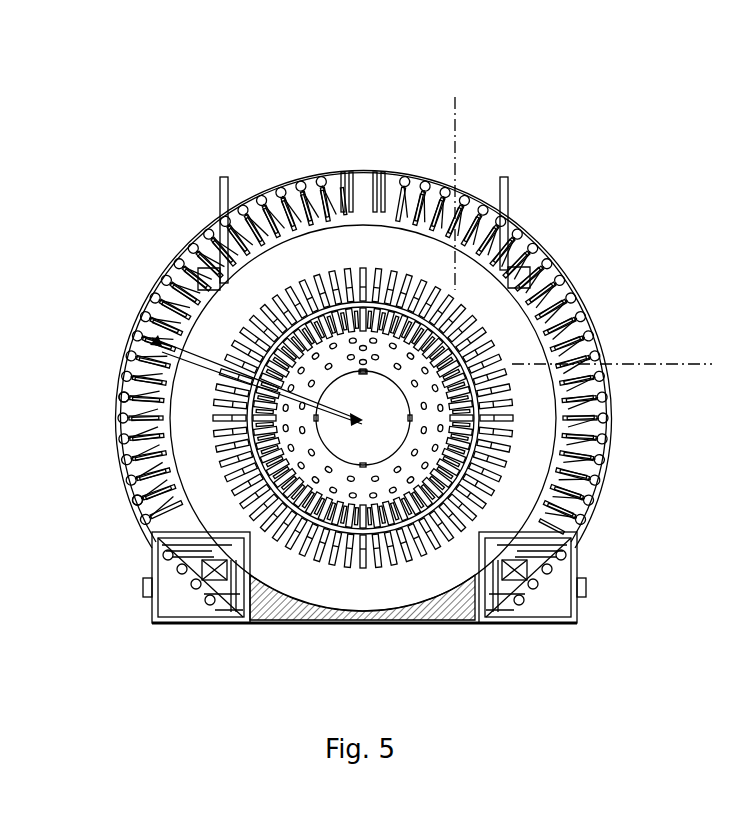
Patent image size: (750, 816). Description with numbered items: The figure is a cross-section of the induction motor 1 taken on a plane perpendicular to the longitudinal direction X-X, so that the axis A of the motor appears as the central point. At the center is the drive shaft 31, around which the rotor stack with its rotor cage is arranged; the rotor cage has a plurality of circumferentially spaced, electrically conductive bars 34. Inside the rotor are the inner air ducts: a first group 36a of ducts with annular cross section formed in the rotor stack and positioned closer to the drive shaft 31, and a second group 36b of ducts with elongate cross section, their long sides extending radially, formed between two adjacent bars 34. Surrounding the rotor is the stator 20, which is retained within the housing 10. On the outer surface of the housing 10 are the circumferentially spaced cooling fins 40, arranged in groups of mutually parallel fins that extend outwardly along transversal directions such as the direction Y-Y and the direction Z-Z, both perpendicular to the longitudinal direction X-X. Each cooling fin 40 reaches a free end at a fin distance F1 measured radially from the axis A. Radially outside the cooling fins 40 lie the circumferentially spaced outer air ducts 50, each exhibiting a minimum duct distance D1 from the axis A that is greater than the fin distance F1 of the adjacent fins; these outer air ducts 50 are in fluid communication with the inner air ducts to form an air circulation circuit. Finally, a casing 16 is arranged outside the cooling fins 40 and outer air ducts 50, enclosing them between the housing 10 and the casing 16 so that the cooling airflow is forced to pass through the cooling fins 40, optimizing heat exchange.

The induction motor 1 is at (604, 178).
The housing 10 is at (200, 268).
The casing 16 is at (278, 183).
The stator 20 is at (170, 428).
The drive shaft 31 is at (364, 418).
The circumferentially spaced bars 34 is at (270, 537).
The first group of inner air ducts 36a is at (393, 500).
The second group of inner air ducts 36b is at (345, 530).
The cooling fins 40 is at (152, 338).
The outer air ducts 50 is at (119, 397).
The axis A is at (364, 418).
The minimum duct distance D1 is at (118, 418).
The fin distance F1 is at (200, 300).
The longitudinal direction X-X is at (500, 470).
The transversal direction Y-Y is at (684, 362).
The transversal direction Z-Z is at (456, 97).